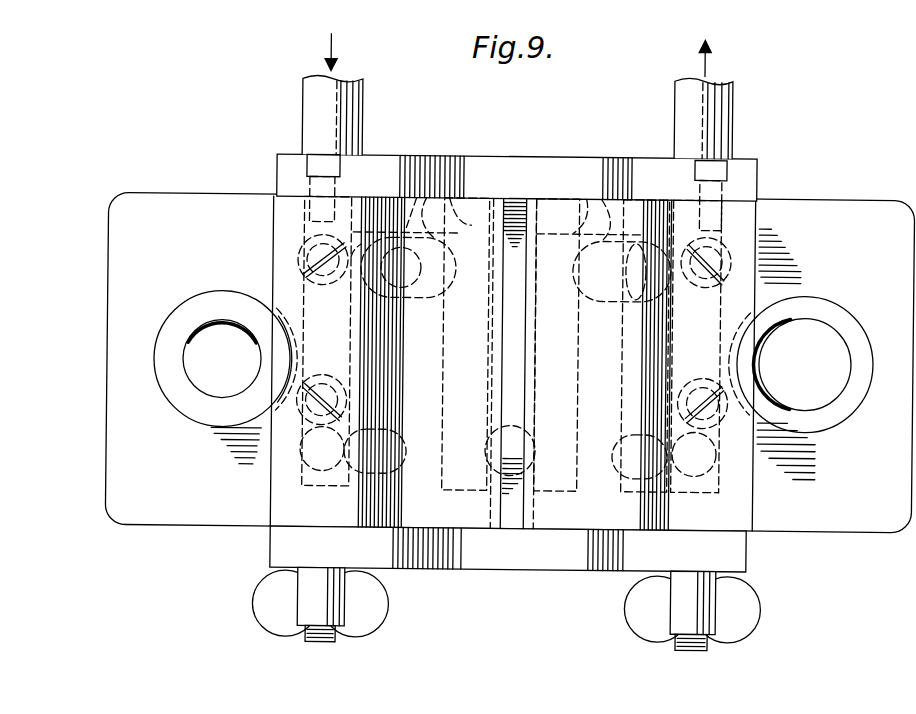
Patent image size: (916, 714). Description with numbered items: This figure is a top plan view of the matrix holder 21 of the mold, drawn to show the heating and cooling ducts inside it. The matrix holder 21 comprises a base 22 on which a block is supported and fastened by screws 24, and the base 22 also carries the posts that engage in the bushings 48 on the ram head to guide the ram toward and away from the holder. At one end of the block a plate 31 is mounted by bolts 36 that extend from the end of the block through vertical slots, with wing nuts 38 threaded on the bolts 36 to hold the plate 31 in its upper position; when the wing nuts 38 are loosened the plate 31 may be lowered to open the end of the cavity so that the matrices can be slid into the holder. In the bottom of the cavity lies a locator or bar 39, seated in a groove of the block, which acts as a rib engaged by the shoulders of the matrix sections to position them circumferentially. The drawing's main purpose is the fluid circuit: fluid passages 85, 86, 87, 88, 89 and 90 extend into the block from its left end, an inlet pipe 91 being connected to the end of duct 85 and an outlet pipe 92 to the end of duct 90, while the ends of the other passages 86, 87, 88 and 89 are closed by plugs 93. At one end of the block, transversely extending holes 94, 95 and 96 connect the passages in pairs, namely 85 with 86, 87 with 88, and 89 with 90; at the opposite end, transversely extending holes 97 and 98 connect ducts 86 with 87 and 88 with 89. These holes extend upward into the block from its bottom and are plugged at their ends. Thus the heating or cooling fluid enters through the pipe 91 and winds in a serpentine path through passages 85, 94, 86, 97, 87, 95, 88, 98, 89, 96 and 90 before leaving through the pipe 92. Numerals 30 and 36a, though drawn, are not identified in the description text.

The matrix holder 21 is at (236, 150).
The base 22 is at (108, 248).
The screws 24 is at (322, 286).
The wing nut 30 is at (640, 620).
The plate 31 is at (280, 538).
The bolts 36 is at (314, 645).
The nut 36a is at (345, 160).
The wing nuts 38 is at (272, 610).
The locator or bar 39 is at (503, 505).
The bushings 48 is at (178, 383).
The fluid passage 85 is at (303, 290).
The fluid passage 86 is at (400, 335).
The fluid passage 87 is at (443, 380).
The fluid passage 88 is at (580, 350).
The fluid passage 89 is at (606, 412).
The fluid passage 90 is at (722, 312).
The inlet pipe 91 is at (310, 104).
The outlet pipe 92 is at (682, 112).
The plugs 93 is at (438, 212).
The transversely extending hole 94 is at (340, 472).
The transversely extending hole 95 is at (494, 438).
The transversely extending hole 96 is at (688, 446).
The transversely extending hole 97 is at (405, 300).
The transversely extending hole 98 is at (592, 302).